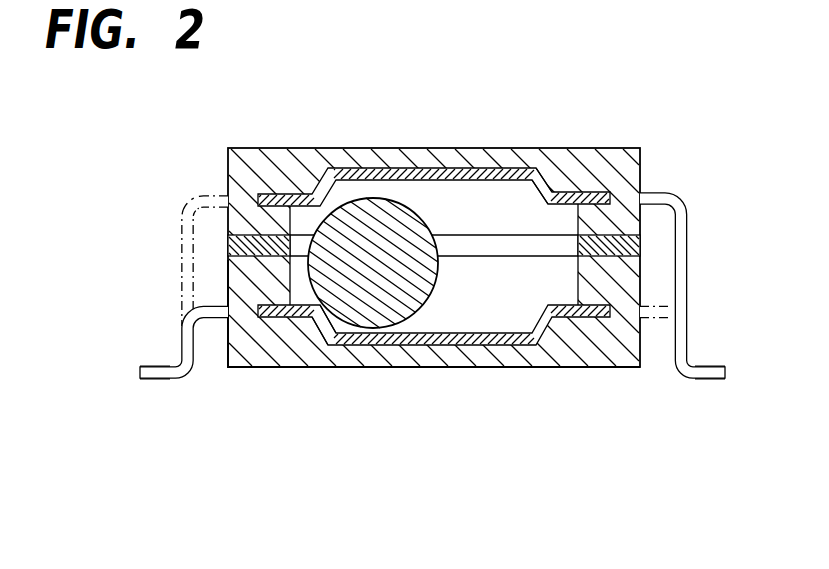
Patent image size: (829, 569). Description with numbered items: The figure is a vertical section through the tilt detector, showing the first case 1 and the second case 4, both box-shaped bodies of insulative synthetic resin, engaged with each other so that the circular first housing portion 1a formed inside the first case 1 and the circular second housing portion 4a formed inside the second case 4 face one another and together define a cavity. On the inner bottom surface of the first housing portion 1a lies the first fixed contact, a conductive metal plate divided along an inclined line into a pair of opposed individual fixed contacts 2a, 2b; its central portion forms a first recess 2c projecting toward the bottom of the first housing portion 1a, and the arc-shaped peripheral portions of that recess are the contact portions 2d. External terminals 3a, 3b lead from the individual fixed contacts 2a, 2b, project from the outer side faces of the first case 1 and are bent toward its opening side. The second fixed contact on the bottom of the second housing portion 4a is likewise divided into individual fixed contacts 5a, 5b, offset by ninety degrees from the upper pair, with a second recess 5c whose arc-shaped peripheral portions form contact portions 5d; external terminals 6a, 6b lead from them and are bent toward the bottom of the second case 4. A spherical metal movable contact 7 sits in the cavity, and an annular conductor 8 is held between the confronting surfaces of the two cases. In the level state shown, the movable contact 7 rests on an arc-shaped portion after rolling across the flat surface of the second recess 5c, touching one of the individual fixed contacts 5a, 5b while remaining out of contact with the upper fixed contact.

The first case 1 is at (648, 148).
The first housing portion 1a is at (465, 207).
The individual fixed contact 2a is at (386, 165).
The individual fixed contact 2b is at (475, 168).
The first recess 2c is at (515, 168).
The contact portions 2d is at (278, 148).
The external terminal 3a is at (182, 270).
The external terminal 3b is at (710, 380).
The second case 4 is at (224, 369).
The second housing portion 4a is at (458, 300).
The individual fixed contact 5a is at (368, 348).
The individual fixed contact 5b is at (473, 342).
The second recess 5c is at (545, 305).
The contact portions 5d is at (303, 322).
The external terminal 6a is at (143, 381).
The external terminal 6b is at (650, 318).
The movable contact 7 is at (337, 148).
The conductor 8 is at (636, 248).